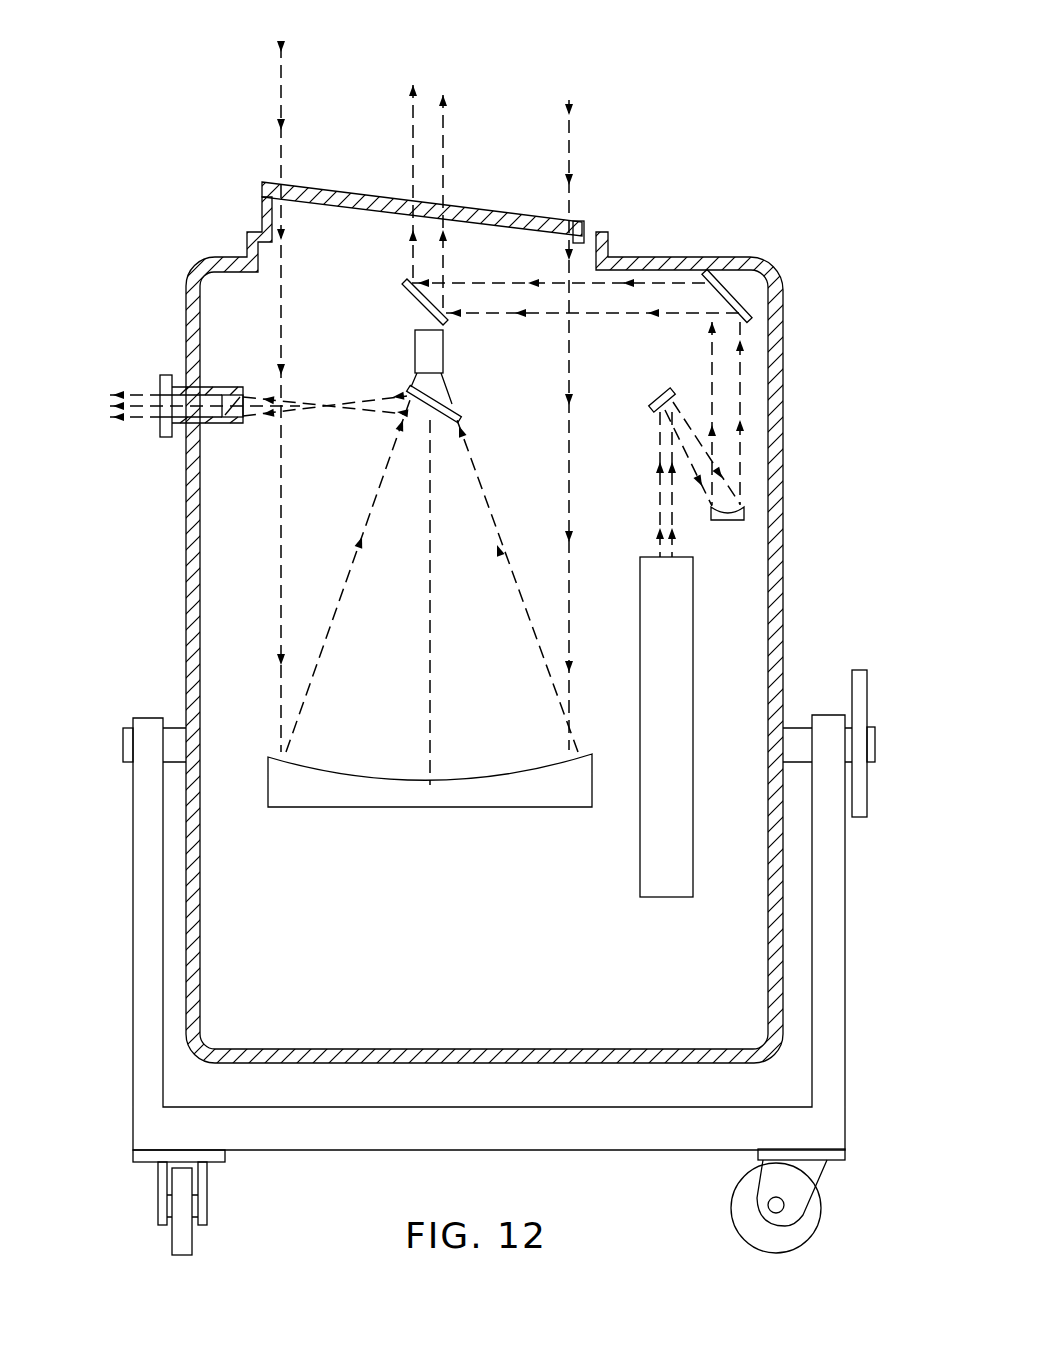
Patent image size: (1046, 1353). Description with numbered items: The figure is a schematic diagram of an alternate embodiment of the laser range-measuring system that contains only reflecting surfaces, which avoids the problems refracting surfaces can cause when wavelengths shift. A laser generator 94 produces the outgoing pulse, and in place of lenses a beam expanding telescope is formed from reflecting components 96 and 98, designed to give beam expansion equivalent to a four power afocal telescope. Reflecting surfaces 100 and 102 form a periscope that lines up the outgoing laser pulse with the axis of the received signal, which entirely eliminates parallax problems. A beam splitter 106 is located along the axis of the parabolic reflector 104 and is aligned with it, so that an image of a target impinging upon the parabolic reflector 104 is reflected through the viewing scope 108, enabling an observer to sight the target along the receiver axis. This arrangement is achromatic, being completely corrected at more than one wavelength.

The laser generator 94 is at (680, 715).
The reflecting component 96 is at (658, 394).
The reflecting component 98 is at (738, 529).
The reflecting surface 100 is at (748, 266).
The reflecting surface 102 is at (413, 297).
The parabolic reflector 104 is at (518, 807).
The beam splitter 106 is at (455, 411).
The viewing scope 108 is at (244, 420).